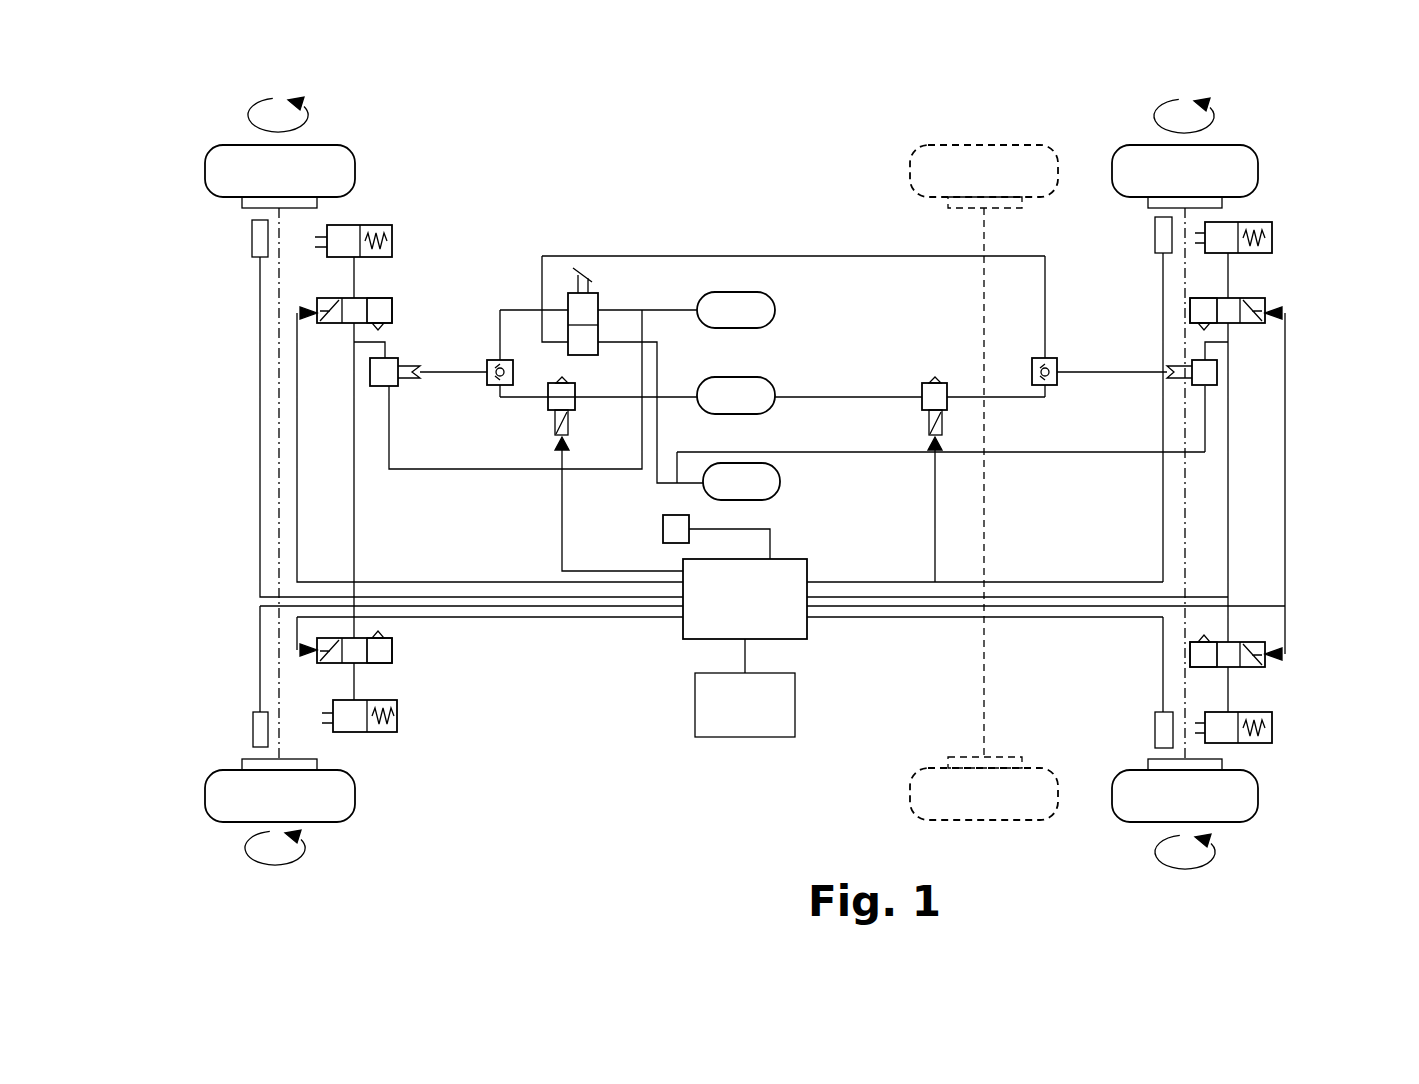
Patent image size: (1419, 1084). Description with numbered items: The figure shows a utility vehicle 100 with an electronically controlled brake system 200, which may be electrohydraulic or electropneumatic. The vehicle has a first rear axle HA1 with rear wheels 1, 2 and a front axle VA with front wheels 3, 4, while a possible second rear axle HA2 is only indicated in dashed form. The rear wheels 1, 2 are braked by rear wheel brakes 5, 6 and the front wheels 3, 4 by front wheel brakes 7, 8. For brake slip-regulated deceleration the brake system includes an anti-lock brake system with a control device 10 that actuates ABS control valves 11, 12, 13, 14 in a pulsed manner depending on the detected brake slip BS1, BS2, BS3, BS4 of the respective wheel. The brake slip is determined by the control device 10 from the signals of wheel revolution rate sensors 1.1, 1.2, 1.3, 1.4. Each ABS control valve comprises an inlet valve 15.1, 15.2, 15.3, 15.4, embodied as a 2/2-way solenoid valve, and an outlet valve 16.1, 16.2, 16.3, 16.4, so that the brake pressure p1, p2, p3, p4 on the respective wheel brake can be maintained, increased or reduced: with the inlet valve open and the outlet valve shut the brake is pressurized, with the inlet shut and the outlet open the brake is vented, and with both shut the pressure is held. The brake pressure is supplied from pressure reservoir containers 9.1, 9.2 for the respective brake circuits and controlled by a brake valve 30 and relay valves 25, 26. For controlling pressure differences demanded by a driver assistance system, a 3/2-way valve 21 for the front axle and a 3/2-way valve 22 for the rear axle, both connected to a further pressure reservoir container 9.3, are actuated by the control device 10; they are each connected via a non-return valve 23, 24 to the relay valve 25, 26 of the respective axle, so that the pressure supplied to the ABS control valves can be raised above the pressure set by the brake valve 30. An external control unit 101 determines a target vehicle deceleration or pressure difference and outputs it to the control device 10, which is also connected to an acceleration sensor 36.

The rear wheel 1 is at (1112, 800).
The rear wheel 2 is at (1258, 170).
The front wheel 3 is at (355, 795).
The front wheel 4 is at (355, 170).
The rear wheel brake 5 is at (1272, 727).
The rear wheel brake 6 is at (1272, 239).
The front wheel brake 7 is at (397, 716).
The front wheel brake 8 is at (392, 242).
The pressure reservoir container 9.1 is at (775, 308).
The pressure reservoir container 9.2 is at (780, 485).
The pressure reservoir container 9.3 is at (775, 390).
The control device 10 is at (807, 625).
The ABS control valve 11 is at (1253, 667).
The ABS control valve 12 is at (1250, 323).
The ABS control valve 13 is at (390, 650).
The ABS control valve 14 is at (392, 315).
The inlet valve 15.1 is at (1233, 642).
The inlet valve 15.2 is at (1237, 296).
The inlet valve 15.3 is at (318, 638).
The inlet valve 15.4 is at (347, 326).
The outlet valve 16.1 is at (1190, 652).
The outlet valve 16.2 is at (1190, 300).
The outlet valve 16.3 is at (380, 663).
The outlet valve 16.4 is at (383, 298).
The wheel revolution rate sensor 1.1 is at (1155, 728).
The wheel revolution rate sensor 1.2 is at (1155, 235).
The wheel revolution rate sensor 1.3 is at (253, 730).
The wheel revolution rate sensor 1.4 is at (252, 238).
The 3/2-way valve 21 is at (548, 407).
The 3/2-way valve 22 is at (947, 402).
The non-return valve 23 is at (500, 397).
The non-return valve 24 is at (1050, 395).
The relay valve 25 is at (370, 372).
The relay valve 26 is at (1217, 372).
The brake valve 30 is at (600, 297).
The acceleration sensor 36 is at (663, 529).
The vehicle 100 is at (747, 195).
The external control unit 101 is at (745, 737).
The brake system 200 is at (597, 769).
The brake slip BS1 is at (1215, 850).
The brake slip BS2 is at (1215, 118).
The brake slip BS3 is at (307, 848).
The brake slip BS4 is at (308, 113).
The first rear axle HA1 is at (1185, 568).
The second rear axle HA2 is at (984, 658).
The front axle VA is at (277, 685).
The brake pressure p1 is at (1230, 688).
The brake pressure p2 is at (1228, 277).
The brake pressure p3 is at (350, 683).
The brake pressure p4 is at (353, 278).